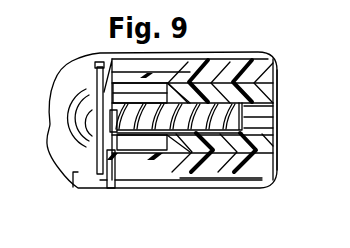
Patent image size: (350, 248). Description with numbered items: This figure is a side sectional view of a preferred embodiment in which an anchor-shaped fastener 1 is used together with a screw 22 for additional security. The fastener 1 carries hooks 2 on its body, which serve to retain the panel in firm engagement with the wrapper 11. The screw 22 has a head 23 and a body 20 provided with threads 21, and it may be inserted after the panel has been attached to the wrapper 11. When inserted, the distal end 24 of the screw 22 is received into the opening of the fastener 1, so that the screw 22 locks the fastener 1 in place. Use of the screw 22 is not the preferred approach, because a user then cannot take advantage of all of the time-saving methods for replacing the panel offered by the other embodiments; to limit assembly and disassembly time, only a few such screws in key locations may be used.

The fastener 1 is at (201, 184).
The hooks 2 is at (238, 62).
The wrapper 11 is at (108, 181).
The body 20 is at (126, 131).
The threads 21 is at (215, 112).
The screw 22 is at (75, 80).
The head 23 is at (82, 134).
The distal end 24 is at (276, 112).